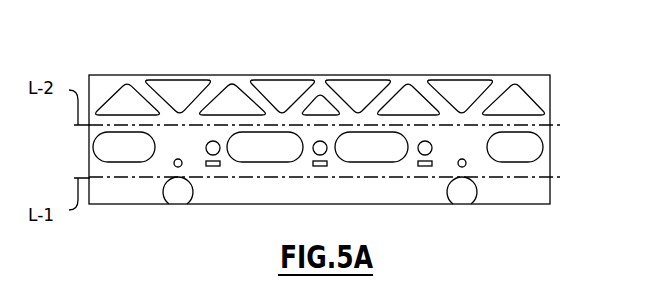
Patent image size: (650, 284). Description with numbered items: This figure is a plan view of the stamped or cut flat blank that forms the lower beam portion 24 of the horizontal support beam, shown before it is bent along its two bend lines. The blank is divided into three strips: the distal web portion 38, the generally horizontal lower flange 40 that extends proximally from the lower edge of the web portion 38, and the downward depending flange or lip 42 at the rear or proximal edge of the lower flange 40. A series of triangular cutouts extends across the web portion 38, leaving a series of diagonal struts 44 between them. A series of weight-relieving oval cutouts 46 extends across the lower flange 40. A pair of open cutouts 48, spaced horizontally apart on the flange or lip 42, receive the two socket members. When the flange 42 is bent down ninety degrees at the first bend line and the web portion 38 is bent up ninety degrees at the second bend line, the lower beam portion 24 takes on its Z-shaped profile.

The lower beam portion 24 is at (383, 60).
The distal web portion 38 is at (540, 90).
The lower flange 40 is at (540, 168).
The downward depending flange or lip 42 is at (372, 213).
The diagonal struts 44 is at (263, 100).
The weight-relieving oval cutouts 46 is at (109, 145).
The open cutouts 48 is at (177, 197).